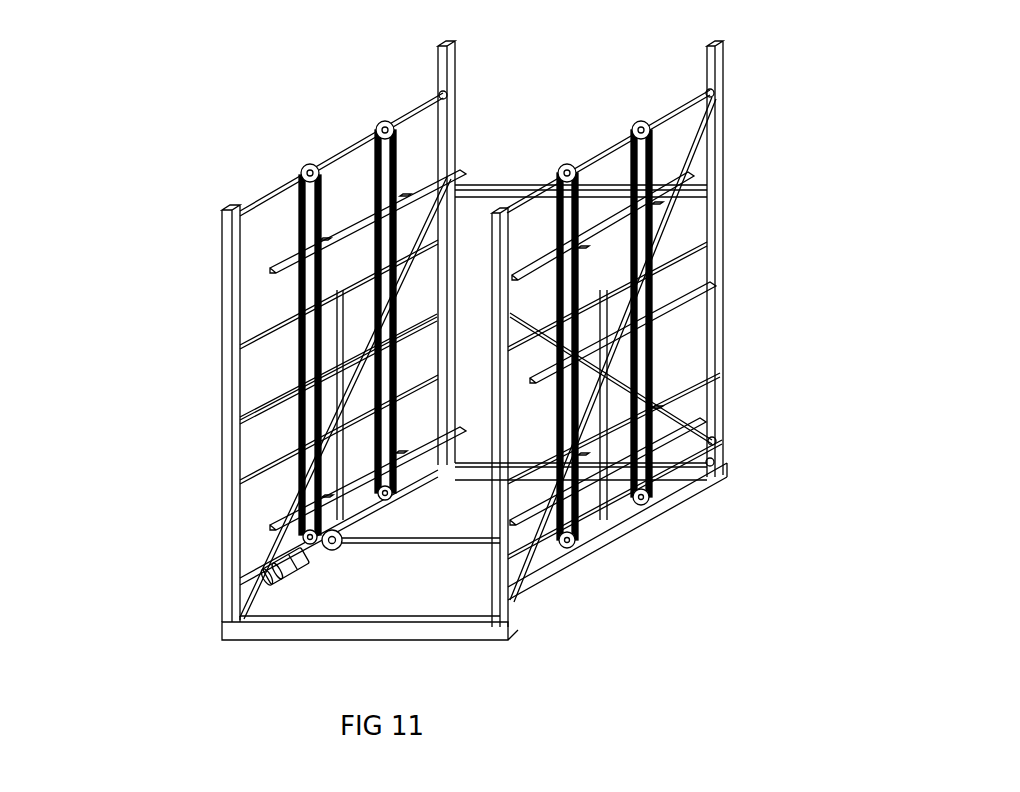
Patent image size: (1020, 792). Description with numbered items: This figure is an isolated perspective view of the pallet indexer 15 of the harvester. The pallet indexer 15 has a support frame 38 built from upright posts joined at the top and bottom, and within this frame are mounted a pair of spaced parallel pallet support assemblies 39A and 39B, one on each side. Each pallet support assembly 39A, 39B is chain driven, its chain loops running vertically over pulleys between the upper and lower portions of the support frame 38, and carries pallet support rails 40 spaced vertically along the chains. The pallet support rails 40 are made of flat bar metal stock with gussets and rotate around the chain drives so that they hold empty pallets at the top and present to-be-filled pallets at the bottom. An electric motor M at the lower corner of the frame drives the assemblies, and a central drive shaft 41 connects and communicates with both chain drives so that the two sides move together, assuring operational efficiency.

The pallet indexer 15 is at (575, 103).
The support frame 38 is at (733, 57).
The pallet support assembly 39A is at (293, 223).
The pallet support assembly 39B is at (663, 367).
The pallet support rails 40 is at (352, 218).
The central drive shaft 41 is at (343, 553).
The electric motor M is at (295, 585).